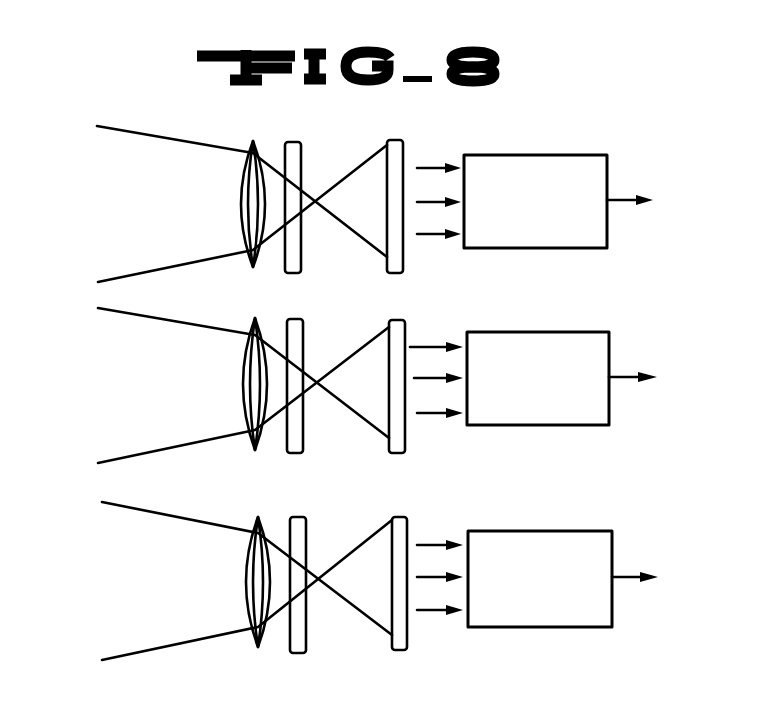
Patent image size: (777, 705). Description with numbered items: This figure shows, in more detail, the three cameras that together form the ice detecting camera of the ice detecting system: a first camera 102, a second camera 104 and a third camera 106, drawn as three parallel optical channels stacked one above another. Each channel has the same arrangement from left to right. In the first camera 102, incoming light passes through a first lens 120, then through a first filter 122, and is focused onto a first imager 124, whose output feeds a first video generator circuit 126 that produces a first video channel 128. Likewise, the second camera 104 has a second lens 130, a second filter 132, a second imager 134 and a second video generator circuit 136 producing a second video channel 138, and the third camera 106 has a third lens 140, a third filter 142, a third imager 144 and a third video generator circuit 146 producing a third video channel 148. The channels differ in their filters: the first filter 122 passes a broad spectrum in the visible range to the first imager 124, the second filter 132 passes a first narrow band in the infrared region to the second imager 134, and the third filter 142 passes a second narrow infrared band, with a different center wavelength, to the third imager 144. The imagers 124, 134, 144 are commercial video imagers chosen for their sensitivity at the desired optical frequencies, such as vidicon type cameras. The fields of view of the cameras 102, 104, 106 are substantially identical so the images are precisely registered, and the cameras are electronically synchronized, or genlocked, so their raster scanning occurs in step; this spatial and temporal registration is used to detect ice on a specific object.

The first camera 102 is at (188, 189).
The second camera 104 is at (196, 367).
The third camera 106 is at (210, 558).
The first lens 120 is at (245, 230).
The first filter 122 is at (293, 140).
The first imager 124 is at (395, 140).
The first video generator circuit 126 is at (505, 155).
The first video channel 128 is at (623, 197).
The second lens 130 is at (245, 413).
The second filter 132 is at (295, 319).
The second imager 134 is at (395, 320).
The second video generator circuit 136 is at (508, 332).
The second video channel 138 is at (623, 373).
The third lens 140 is at (245, 605).
The third filter 142 is at (298, 517).
The third imager 144 is at (398, 517).
The third video generator circuit 146 is at (492, 531).
The third video channel 148 is at (622, 572).